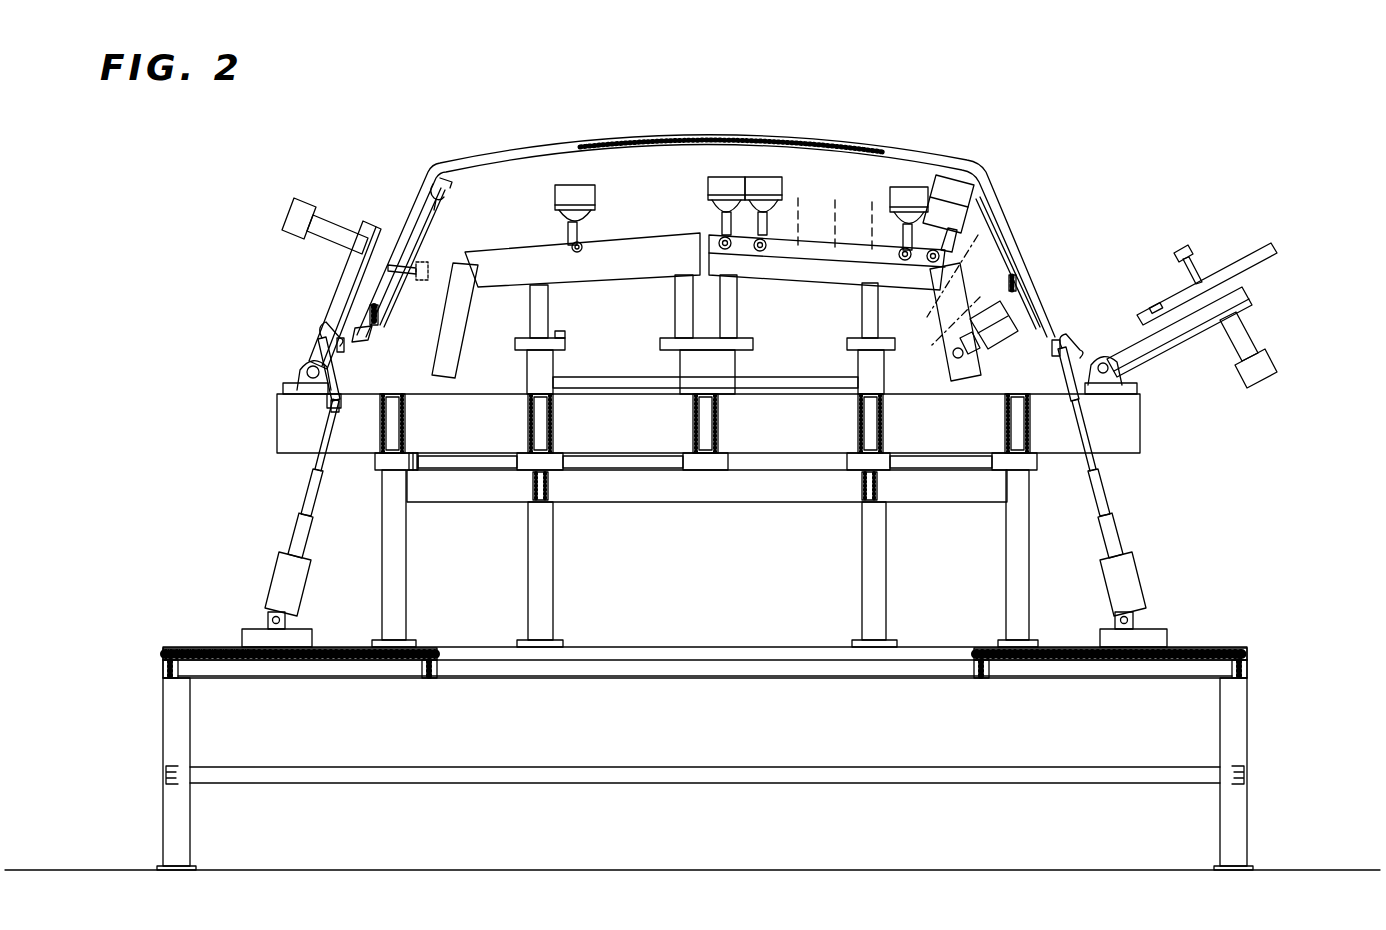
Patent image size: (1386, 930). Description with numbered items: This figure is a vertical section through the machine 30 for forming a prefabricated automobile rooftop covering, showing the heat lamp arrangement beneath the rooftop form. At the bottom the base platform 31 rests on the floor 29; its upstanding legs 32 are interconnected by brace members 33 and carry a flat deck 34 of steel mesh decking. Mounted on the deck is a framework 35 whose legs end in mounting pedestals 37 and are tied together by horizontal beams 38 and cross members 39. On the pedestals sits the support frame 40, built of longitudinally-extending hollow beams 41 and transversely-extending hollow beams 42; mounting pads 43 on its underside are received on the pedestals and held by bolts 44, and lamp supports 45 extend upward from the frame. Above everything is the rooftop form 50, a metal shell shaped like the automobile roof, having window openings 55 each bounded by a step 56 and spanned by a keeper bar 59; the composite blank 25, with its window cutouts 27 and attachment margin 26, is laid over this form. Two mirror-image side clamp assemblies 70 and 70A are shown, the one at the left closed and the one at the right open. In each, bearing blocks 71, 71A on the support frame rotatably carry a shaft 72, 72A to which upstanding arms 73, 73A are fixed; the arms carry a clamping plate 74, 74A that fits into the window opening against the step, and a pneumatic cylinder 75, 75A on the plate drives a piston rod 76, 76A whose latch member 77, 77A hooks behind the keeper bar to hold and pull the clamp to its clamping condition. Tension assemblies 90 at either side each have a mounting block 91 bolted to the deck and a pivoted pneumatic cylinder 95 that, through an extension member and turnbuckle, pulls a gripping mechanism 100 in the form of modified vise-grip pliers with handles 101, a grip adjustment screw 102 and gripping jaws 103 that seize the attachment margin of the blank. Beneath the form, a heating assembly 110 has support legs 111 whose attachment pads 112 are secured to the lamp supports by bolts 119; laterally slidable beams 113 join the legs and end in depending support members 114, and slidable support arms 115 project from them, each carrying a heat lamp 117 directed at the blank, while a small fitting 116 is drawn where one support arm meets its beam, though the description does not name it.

The blank 25 is at (524, 150).
The attachment margin 26 is at (358, 333).
The window cutouts 27 is at (437, 202).
The floor 29 is at (815, 868).
The machine 30 is at (1096, 97).
The base platform 31 is at (1258, 718).
The legs 32 is at (553, 591).
The brace members 33 is at (430, 664).
The deck 34 is at (1215, 648).
The framework 35 is at (850, 576).
The mounting pedestal 37 is at (562, 464).
The beams 38 is at (690, 495).
The cross members 39 is at (549, 493).
The support frame 40 is at (713, 432).
The longitudinally-extending hollow beams 41 is at (884, 416).
The transversely-extending hollow beams 42 is at (282, 437).
The mounting pads 43 is at (888, 463).
The bolts 44 is at (420, 453).
The lamp supports 45 is at (527, 378).
The rooftop form 50 is at (672, 153).
The window openings 55 is at (450, 205).
The step 56 is at (442, 195).
The keeper bar 59 is at (377, 305).
The side clamp assembly 70 is at (333, 280).
The side clamp assembly 70A is at (1224, 311).
The bearing blocks 71 is at (288, 378).
The bearing blocks 71A is at (1128, 381).
The shaft 72 is at (307, 366).
The shaft 72A is at (1102, 358).
The arms 73 is at (340, 276).
The arms 73A is at (1185, 330).
The clamping plate 74 is at (406, 220).
The clamping plate 74A is at (1258, 263).
The pneumatic cylinder 75 is at (306, 216).
The pneumatic cylinder 75A is at (1258, 346).
The piston rod 76 is at (395, 265).
The piston rod 76A is at (1200, 270).
The latch member 77 is at (409, 282).
The latch member 77A is at (1186, 250).
The tension assembly 90 is at (714, 477).
The mounting block 91 is at (1163, 632).
The pneumatic cylinder 95 is at (270, 586).
The gripping mechanism 100 is at (360, 379).
The handles 101 is at (311, 407).
The grip adjustment screw 102 is at (337, 412).
The gripping jaws 103 is at (340, 346).
The heating assembly 110 is at (832, 285).
The support legs 111 is at (545, 322).
The attachment pad 112 is at (705, 366).
The beams 113 is at (638, 268).
The support member 114 is at (459, 338).
The support arms 115 is at (580, 229).
The rivet 116 is at (572, 246).
The heat lamp 117 is at (770, 188).
The bolts 119 is at (566, 334).